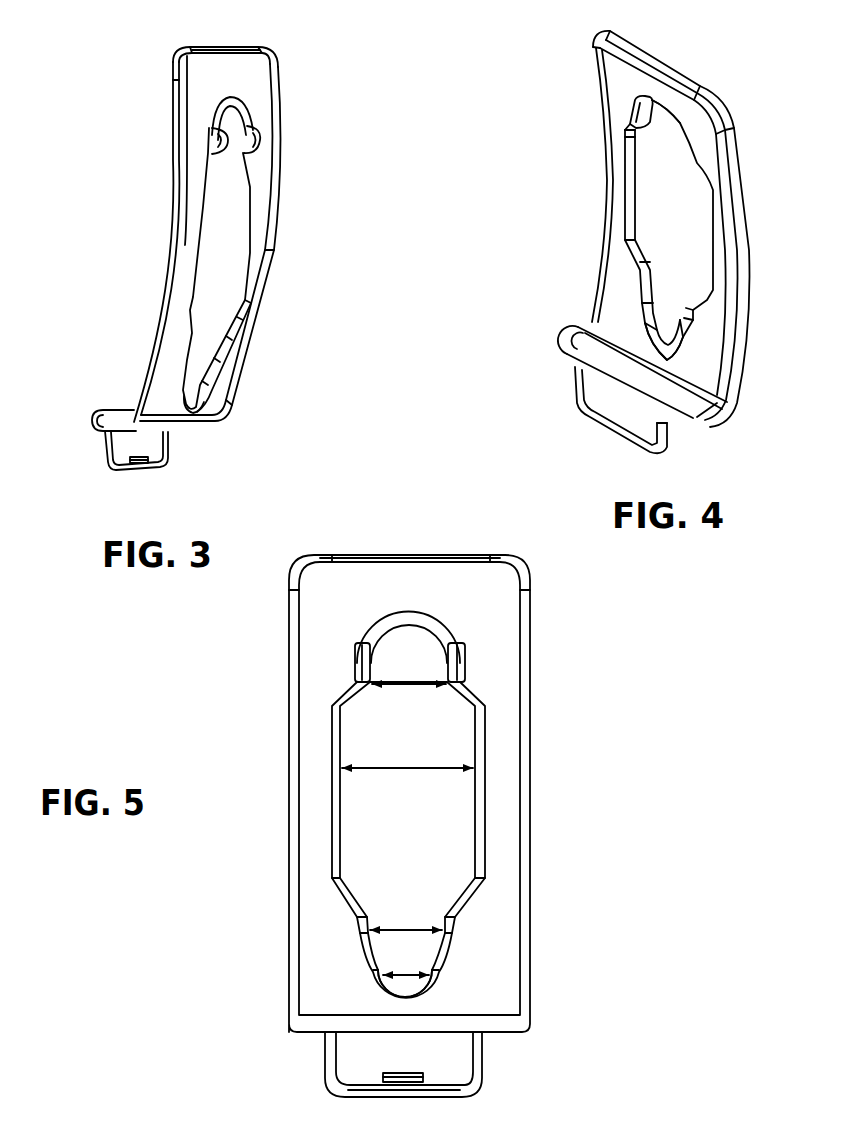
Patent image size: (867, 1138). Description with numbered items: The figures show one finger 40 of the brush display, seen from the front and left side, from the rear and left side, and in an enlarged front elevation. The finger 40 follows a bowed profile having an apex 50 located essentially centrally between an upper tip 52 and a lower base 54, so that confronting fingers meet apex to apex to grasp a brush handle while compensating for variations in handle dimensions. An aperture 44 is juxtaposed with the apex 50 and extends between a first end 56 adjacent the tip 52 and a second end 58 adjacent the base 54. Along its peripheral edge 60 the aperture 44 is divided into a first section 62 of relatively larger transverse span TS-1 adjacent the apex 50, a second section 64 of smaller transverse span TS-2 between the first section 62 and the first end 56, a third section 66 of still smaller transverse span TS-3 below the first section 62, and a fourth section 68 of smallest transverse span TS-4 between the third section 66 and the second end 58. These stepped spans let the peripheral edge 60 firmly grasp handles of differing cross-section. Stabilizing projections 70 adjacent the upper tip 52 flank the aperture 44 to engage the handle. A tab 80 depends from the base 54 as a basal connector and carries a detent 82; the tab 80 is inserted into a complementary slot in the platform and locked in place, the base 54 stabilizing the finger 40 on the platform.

In FIG. 3, the finger 40 is at (189, 271).
In FIG. 4, the finger 40 is at (652, 239).
In FIG. 5, the finger 40 is at (393, 794).
In FIG. 3, the aperture 44 is at (176, 270).
In FIG. 4, the aperture 44 is at (704, 230).
In FIG. 5, the aperture 44 is at (470, 848).
In FIG. 3, the apex 50 is at (268, 245).
In FIG. 5, the apex 50 is at (500, 803).
In FIG. 3, the upper tip 52 is at (243, 50).
In FIG. 4, the upper tip 52 is at (693, 82).
In FIG. 5, the upper tip 52 is at (422, 555).
In FIG. 3, the lower base 54 is at (131, 410).
In FIG. 4, the lower base 54 is at (587, 343).
In FIG. 3, the first end 56 is at (240, 103).
In FIG. 4, the first end 56 is at (650, 97).
In FIG. 5, the first end 56 is at (462, 588).
In FIG. 3, the second end 58 is at (197, 412).
In FIG. 4, the second end 58 is at (657, 363).
In FIG. 5, the second end 58 is at (405, 1008).
In FIG. 3, the peripheral edge 60 is at (243, 270).
In FIG. 4, the peripheral edge 60 is at (642, 205).
In FIG. 5, the peripheral edge 60 is at (470, 851).
In FIG. 5, the first section 62 is at (445, 798).
In FIG. 5, the second section 64 is at (420, 647).
In FIG. 5, the third section 66 is at (420, 943).
In FIG. 5, the fourth section 68 is at (410, 987).
In FIG. 3, the stabilizing projections 70 is at (214, 140).
In FIG. 4, the stabilizing projections 70 is at (639, 113).
In FIG. 5, the stabilizing projections 70 is at (352, 657).
In FIG. 3, the tab 80 is at (122, 443).
In FIG. 4, the tab 80 is at (605, 402).
In FIG. 5, the tab 80 is at (355, 1055).
In FIG. 3, the detent 82 is at (140, 465).
In FIG. 5, the detent 82 is at (423, 1080).
In FIG. 5, the transverse span TS-1 is at (387, 770).
In FIG. 5, the transverse span TS-2 is at (393, 687).
In FIG. 5, the transverse span TS-3 is at (402, 923).
In FIG. 5, the transverse span TS-4 is at (403, 973).